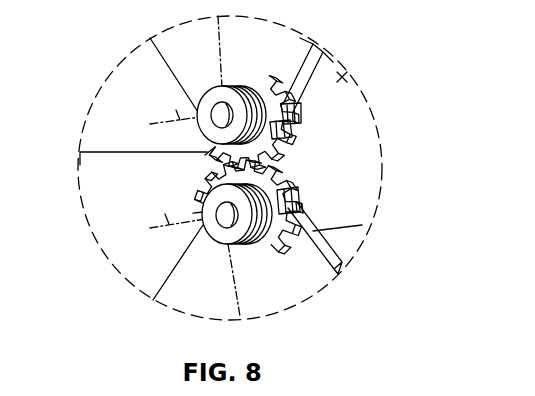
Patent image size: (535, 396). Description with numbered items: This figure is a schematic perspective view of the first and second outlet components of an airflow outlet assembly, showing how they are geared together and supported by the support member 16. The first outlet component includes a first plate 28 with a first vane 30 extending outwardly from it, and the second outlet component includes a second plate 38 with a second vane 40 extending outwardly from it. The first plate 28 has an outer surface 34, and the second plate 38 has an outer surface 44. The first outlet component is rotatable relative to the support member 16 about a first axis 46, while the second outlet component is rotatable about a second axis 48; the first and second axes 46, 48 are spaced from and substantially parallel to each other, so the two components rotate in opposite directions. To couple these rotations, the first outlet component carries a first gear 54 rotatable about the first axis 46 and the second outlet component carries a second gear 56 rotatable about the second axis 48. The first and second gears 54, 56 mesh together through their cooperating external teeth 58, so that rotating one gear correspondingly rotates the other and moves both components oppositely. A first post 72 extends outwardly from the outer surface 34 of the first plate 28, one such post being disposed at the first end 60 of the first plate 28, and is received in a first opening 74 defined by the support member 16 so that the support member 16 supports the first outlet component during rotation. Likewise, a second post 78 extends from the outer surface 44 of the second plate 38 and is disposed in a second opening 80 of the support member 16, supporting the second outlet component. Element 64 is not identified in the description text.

The support member 16 is at (232, 53).
The first plate 28 is at (332, 158).
The first vane 30 is at (349, 76).
The outer surface of the first plate 34 is at (160, 48).
The second plate 38 is at (342, 272).
The second vane 40 is at (358, 229).
The outer surface of the second plate 44 is at (312, 297).
The first axis 46 is at (176, 113).
The second axis 48 is at (165, 218).
The first gear 54 is at (303, 127).
The second gear 56 is at (307, 178).
The external teeth 58 is at (296, 136).
The first end of the first plate 60 is at (272, 95).
The lower gear 64 is at (290, 226).
The first post 72 is at (240, 100).
The first opening 74 is at (205, 131).
The second post 78 is at (229, 247).
The second opening 80 is at (205, 249).